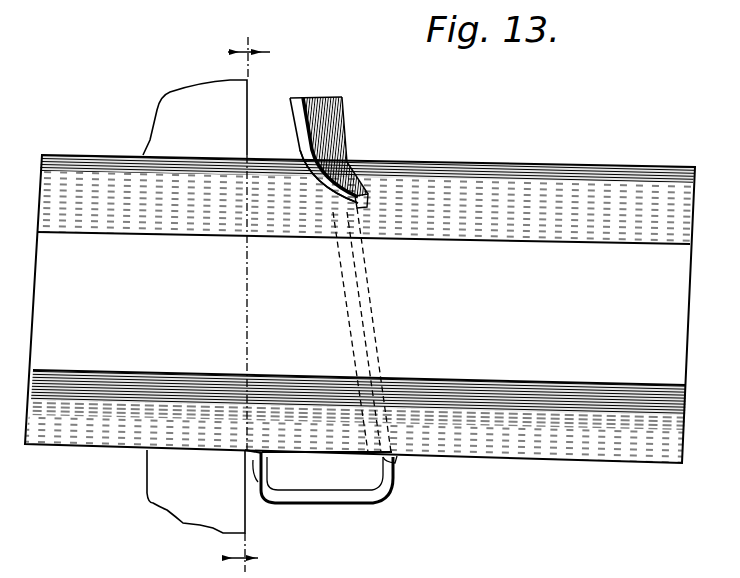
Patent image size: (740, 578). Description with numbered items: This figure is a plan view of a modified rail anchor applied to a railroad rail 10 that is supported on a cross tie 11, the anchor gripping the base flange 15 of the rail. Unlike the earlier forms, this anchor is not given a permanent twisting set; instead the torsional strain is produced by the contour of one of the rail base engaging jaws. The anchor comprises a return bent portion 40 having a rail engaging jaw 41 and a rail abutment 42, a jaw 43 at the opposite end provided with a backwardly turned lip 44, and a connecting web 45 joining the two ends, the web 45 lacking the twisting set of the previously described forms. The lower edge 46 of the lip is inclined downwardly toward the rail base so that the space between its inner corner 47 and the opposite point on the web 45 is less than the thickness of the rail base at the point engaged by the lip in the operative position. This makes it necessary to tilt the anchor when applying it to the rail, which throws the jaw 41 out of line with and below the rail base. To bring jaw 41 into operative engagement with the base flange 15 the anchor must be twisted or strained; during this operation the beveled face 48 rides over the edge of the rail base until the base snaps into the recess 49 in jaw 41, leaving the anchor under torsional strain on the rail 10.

The railroad rail 10 is at (668, 352).
The cross tie 11 is at (190, 505).
The base flange 15 is at (555, 160).
The return bent portion 40 is at (329, 498).
The rail engaging jaw 41 is at (252, 486).
The rail abutment 42 is at (395, 463).
The jaw 43 is at (303, 151).
The backwardly turned lip 44 is at (330, 196).
The connecting web 45 is at (385, 318).
The lower edge of lip 46 is at (336, 160).
The inner corner 47 is at (356, 197).
The beveled face 48 is at (283, 453).
The recess 49 is at (245, 448).